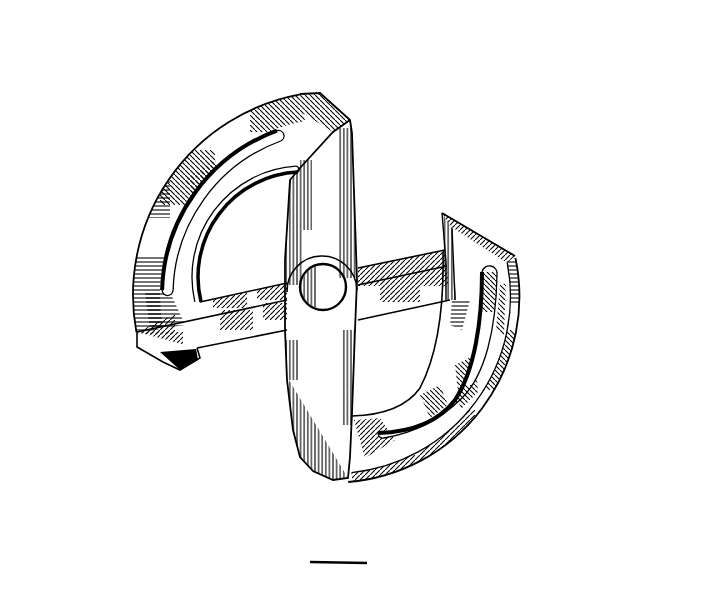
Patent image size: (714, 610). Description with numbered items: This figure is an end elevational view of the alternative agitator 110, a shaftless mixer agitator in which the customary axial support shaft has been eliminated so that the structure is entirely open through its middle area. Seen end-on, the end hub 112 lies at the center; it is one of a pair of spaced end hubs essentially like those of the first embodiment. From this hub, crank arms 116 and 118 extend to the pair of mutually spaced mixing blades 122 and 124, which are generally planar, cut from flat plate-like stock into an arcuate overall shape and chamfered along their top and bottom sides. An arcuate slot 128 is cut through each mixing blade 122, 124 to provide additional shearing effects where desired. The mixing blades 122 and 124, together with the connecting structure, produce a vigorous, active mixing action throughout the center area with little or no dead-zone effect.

The agitator 110 is at (372, 100).
The end hub 112 is at (337, 268).
The crank arm 116 is at (337, 345).
The crank arm 118 is at (330, 212).
The mixing blade 122 is at (482, 360).
The mixing blade 124 is at (207, 140).
The slot 128 is at (168, 242).